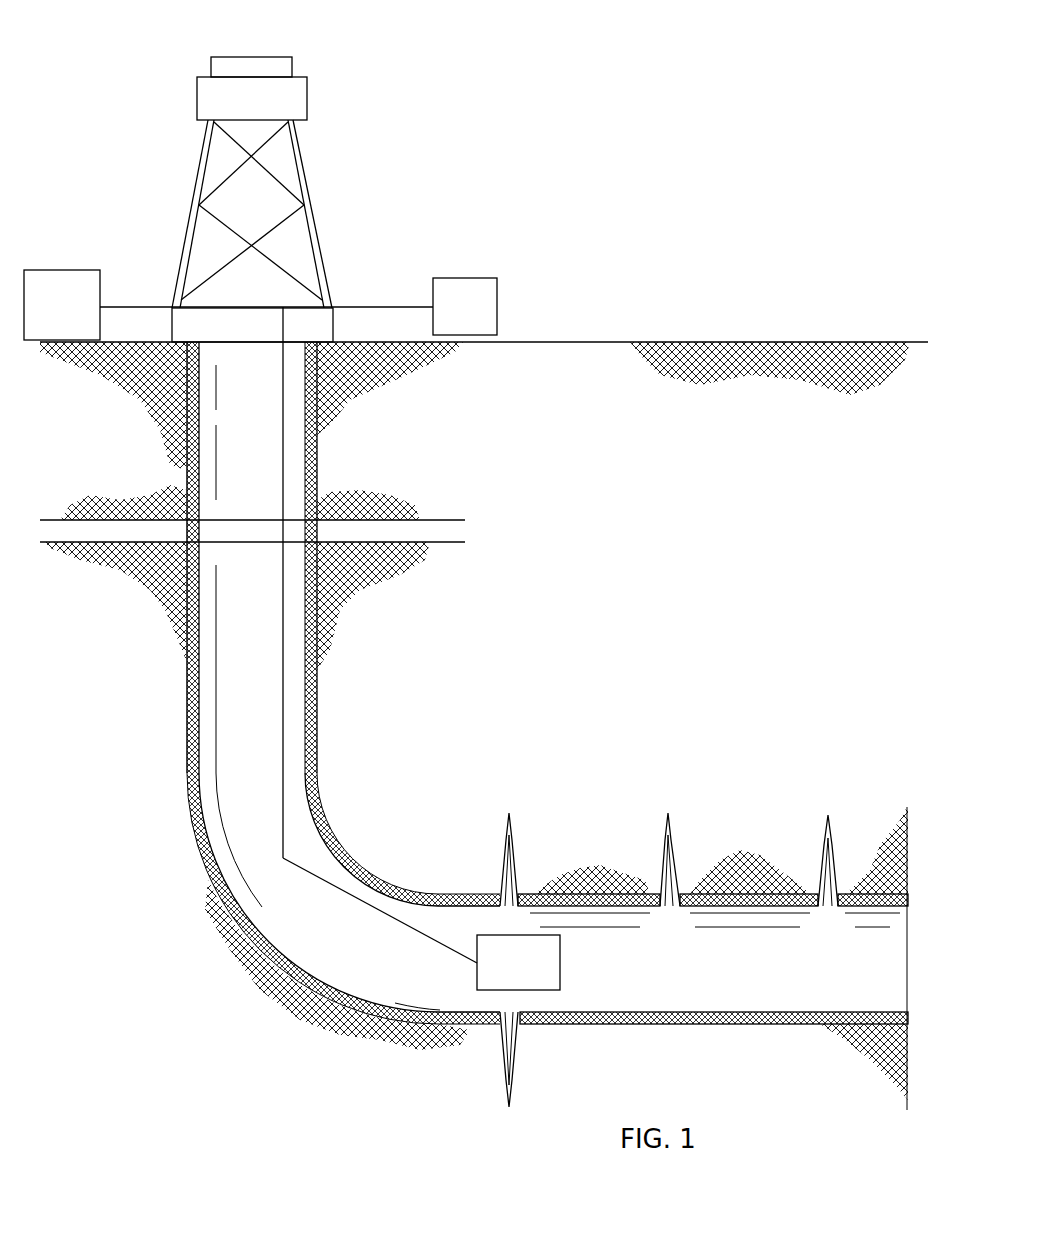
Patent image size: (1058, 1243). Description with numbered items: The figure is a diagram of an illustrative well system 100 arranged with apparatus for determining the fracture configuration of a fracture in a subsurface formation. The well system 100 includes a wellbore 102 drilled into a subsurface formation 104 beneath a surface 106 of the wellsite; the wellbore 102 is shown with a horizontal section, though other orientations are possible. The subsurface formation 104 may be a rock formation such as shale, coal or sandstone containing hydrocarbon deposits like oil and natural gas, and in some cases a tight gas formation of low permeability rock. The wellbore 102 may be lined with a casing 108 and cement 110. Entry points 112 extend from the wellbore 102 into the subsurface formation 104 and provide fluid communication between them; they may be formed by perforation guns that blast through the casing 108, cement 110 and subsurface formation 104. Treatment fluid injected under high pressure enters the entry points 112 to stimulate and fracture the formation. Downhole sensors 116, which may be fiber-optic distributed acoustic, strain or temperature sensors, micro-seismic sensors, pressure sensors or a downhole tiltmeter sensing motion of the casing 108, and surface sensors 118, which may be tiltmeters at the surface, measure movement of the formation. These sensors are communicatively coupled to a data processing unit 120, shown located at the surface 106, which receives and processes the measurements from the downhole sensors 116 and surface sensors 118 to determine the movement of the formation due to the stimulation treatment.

The well system 100 is at (513, 120).
The wellbore 102 is at (547, 683).
The subsurface formation 104 is at (475, 726).
The surface 106 is at (566, 341).
The casing 108 is at (210, 457).
The cement 110 is at (186, 742).
The entry points 112 is at (498, 885).
The downhole sensors 116 is at (501, 973).
The surface sensors 118 is at (448, 317).
The data processing unit 120 is at (45, 316).